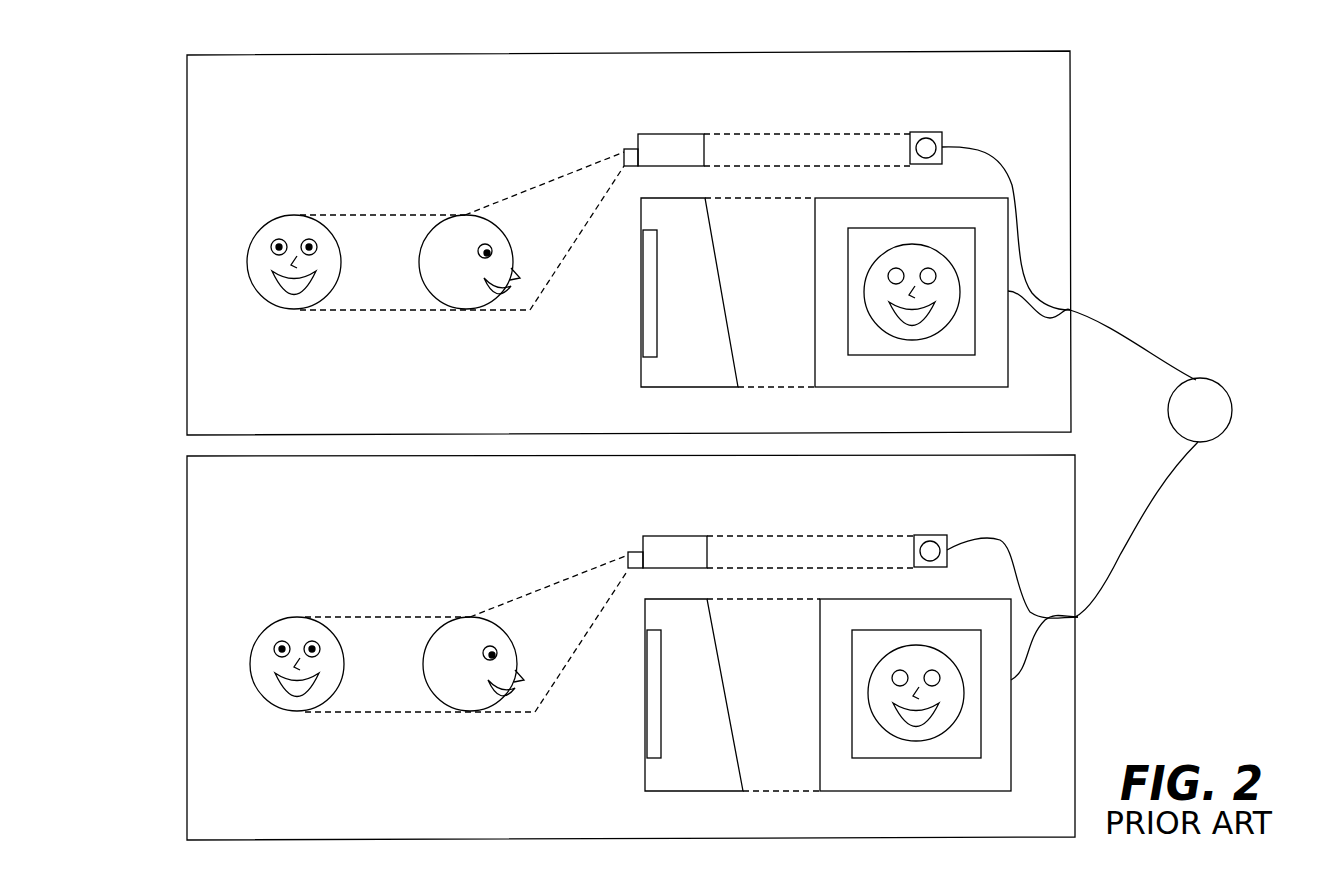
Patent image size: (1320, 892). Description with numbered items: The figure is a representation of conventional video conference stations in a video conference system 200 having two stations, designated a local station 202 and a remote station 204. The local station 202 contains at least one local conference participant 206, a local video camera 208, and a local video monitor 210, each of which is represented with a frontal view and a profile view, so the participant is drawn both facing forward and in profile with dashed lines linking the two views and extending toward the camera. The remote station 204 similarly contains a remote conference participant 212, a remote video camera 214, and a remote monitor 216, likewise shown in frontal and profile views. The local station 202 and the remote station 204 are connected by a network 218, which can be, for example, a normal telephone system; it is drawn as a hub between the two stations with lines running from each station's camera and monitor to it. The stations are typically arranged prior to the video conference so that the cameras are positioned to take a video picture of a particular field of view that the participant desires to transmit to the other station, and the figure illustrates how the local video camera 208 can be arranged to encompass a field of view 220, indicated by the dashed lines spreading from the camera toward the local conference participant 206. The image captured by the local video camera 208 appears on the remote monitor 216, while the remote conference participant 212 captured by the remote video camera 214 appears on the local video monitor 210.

The video conference system 200 is at (1223, 64).
The local station 202 is at (1070, 175).
The remote station 204 is at (1075, 722).
The local conference participant 206 is at (448, 311).
The local video camera 208 is at (925, 132).
The local video monitor 210 is at (815, 292).
The remote conference participant 212 is at (945, 332).
The remote video camera 214 is at (675, 536).
The remote monitor 216 is at (820, 695).
The network 218 is at (1232, 410).
The field of view 220 is at (586, 244).